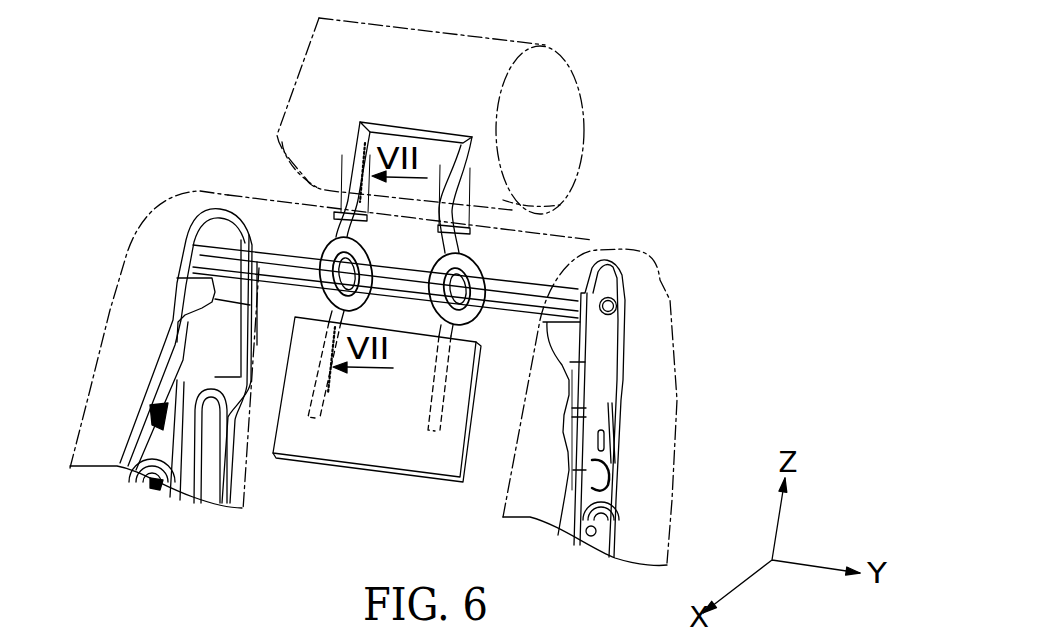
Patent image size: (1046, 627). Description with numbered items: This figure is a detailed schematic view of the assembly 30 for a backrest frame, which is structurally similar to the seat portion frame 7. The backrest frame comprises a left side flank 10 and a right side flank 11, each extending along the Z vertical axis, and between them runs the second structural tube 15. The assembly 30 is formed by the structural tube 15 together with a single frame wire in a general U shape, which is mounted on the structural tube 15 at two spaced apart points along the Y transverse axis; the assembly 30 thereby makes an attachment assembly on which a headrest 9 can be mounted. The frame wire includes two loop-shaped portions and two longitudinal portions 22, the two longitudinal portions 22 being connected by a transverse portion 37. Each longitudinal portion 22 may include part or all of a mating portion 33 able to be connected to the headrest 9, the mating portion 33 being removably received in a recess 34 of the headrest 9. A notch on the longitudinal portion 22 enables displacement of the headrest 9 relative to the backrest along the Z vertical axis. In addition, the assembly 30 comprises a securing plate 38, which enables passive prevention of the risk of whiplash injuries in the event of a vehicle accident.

The seat portion frame 7 is at (128, 200).
The headrest 9 is at (560, 78).
The left side flank 10 is at (605, 378).
The right side flank 11 is at (158, 397).
The second structural tube 15 is at (513, 300).
The longitudinal portion 22 is at (347, 233).
The assembly 30 is at (606, 160).
The mating portion 33 is at (357, 158).
The recess 34 is at (282, 142).
The transverse portion 37 is at (417, 133).
The securing plate 38 is at (367, 443).